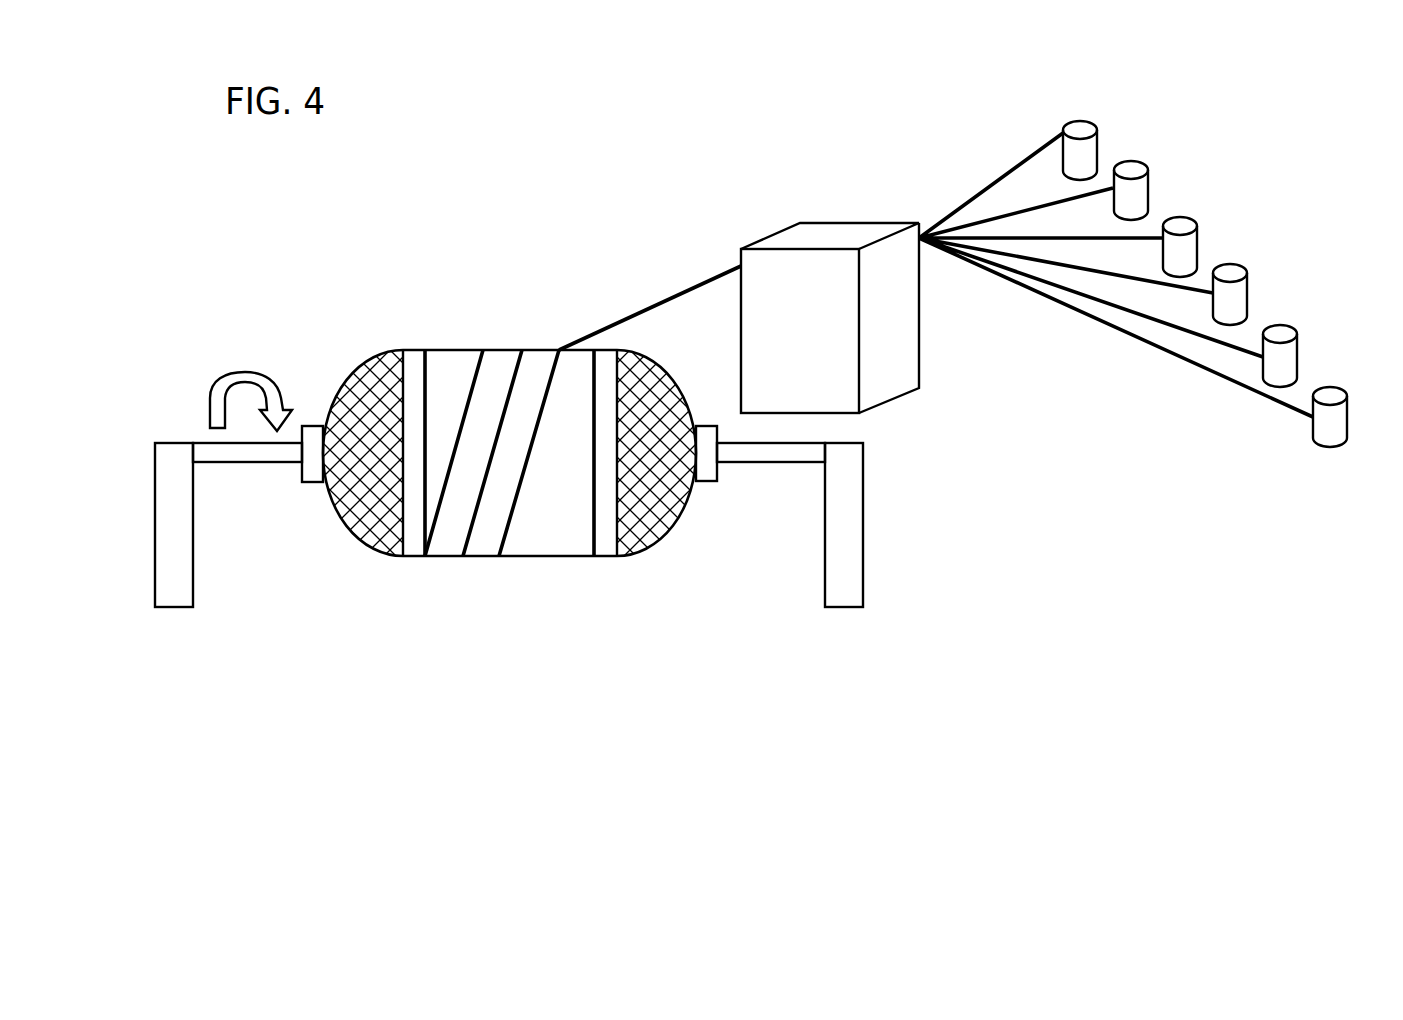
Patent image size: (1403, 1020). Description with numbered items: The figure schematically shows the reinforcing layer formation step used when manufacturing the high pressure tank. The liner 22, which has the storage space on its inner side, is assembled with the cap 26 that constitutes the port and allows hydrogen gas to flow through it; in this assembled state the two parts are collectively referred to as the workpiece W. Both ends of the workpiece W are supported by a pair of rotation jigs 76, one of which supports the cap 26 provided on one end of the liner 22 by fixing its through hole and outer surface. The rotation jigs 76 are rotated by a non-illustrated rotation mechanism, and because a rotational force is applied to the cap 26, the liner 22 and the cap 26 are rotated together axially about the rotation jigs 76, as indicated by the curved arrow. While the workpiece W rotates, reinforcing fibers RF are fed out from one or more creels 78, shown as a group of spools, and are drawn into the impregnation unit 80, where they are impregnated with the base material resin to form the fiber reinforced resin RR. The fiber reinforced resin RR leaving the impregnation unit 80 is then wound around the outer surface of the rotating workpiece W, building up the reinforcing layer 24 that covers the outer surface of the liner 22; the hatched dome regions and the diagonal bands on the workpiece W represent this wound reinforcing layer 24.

The liner 22 is at (453, 350).
The reinforcing layer 24 is at (377, 383).
The cap 26 is at (303, 472).
The rotation jigs 76 is at (176, 600).
The creels 78 is at (1228, 273).
The impregnation unit 80 is at (785, 237).
The workpiece W is at (414, 334).
The fiber reinforced resin RR is at (660, 298).
The reinforcing fibers RF is at (1017, 212).